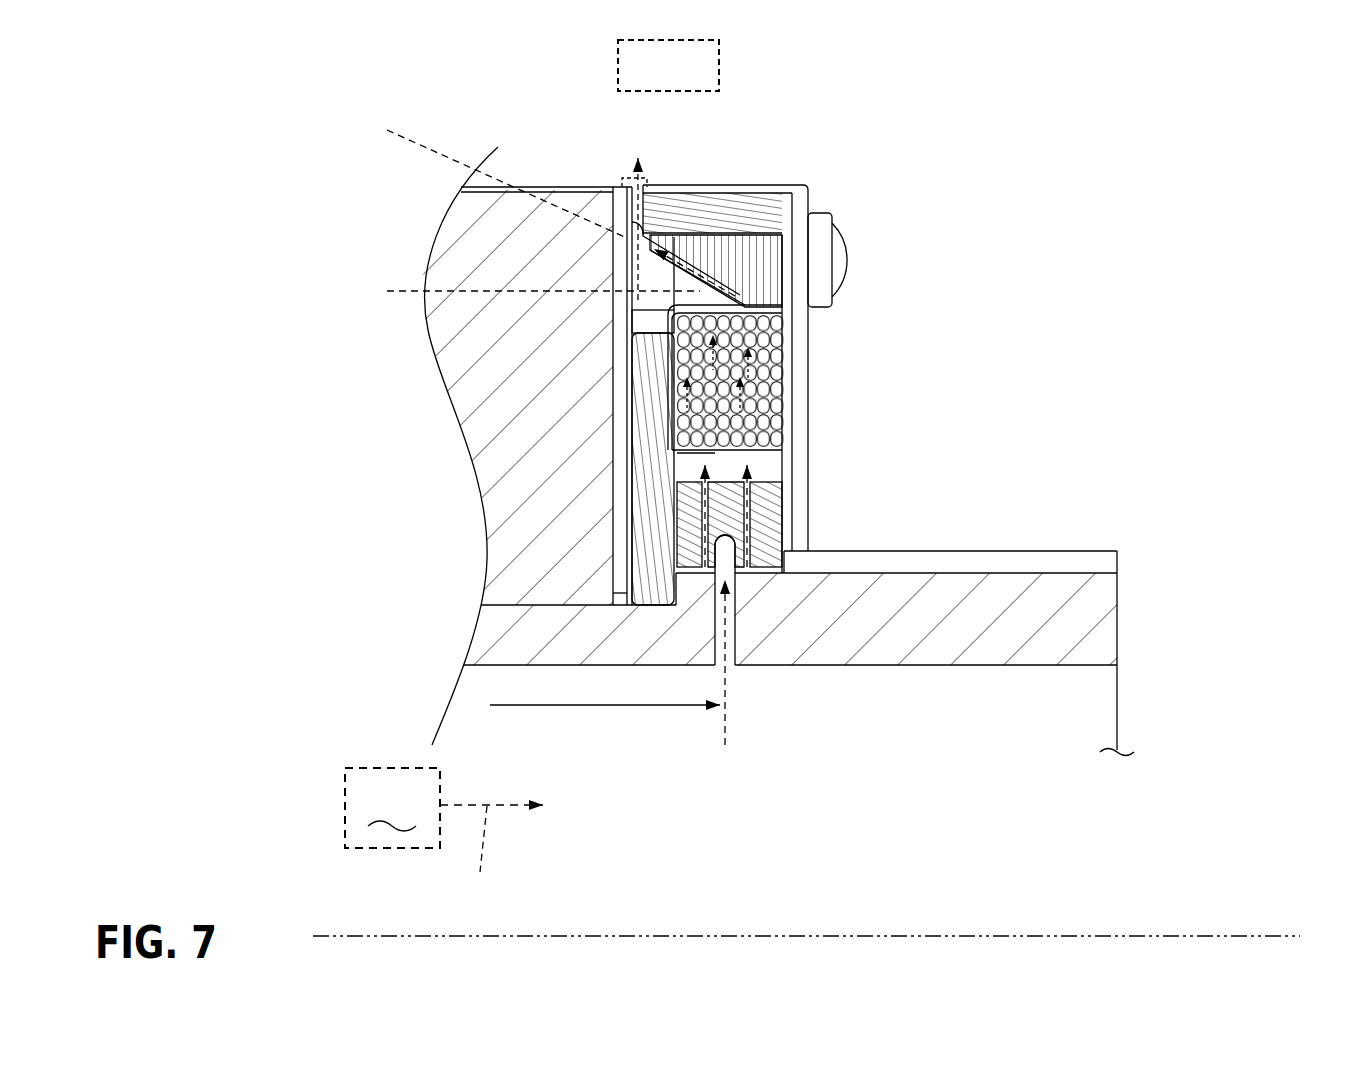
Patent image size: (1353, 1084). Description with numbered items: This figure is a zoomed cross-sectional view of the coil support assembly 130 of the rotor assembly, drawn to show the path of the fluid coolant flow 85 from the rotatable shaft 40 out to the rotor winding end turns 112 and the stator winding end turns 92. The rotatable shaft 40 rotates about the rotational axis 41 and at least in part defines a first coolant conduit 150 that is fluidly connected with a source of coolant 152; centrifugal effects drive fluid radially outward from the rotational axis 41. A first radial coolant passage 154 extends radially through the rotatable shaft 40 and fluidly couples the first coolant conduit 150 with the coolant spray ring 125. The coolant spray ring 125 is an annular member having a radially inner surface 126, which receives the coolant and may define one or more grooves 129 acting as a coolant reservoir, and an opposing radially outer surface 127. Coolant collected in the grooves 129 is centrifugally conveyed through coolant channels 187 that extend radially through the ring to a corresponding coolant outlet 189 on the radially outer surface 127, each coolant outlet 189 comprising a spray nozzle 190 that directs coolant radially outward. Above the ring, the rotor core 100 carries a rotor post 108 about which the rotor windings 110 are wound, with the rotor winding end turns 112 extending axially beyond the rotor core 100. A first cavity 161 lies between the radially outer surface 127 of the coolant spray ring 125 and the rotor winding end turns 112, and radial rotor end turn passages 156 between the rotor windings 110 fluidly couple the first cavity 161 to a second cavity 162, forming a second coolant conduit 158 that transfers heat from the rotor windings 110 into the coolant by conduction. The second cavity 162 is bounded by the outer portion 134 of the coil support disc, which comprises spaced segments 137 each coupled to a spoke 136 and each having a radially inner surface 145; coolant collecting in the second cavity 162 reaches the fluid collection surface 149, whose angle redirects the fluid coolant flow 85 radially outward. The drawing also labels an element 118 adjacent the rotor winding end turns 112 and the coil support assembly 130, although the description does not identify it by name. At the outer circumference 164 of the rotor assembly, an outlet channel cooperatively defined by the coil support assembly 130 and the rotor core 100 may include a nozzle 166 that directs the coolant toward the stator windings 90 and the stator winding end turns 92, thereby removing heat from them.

The rotatable shaft 40 is at (1117, 637).
The rotational axis 41 is at (762, 933).
The fluid coolant flow 85 is at (611, 186).
The stator windings 90 is at (668, 65).
The stator winding end turns 92 is at (668, 65).
The rotor core 100 is at (536, 182).
The rotor post 108 is at (565, 186).
The rotor windings 110 is at (790, 418).
The rotor winding end turns 112 is at (788, 443).
The hub 118 is at (836, 260).
The coolant spray ring 125 is at (782, 498).
The radially inner surface 126 is at (714, 577).
The radially outer surface 127 is at (789, 405).
The grooves 129 is at (733, 556).
The coil support assembly 130 is at (898, 443).
The outer portion 134 is at (786, 236).
The spoke 136 is at (676, 513).
The segments 137 is at (763, 222).
The radially inner surface 145 is at (690, 350).
The fluid collection surface 149 is at (746, 295).
The first coolant conduit 150 is at (506, 743).
The source of coolant 152 is at (444, 808).
The first radial coolant passage 154 is at (731, 617).
The radial rotor end turn passages 156 is at (778, 345).
The second coolant conduit 158 is at (748, 292).
The first cavity 161 is at (656, 436).
The second cavity 162 is at (668, 310).
The outer circumference 164 is at (688, 168).
The nozzle 166 is at (648, 178).
The coolant channels 187 is at (693, 512).
The coolant outlet 189 is at (693, 481).
The spray nozzle 190 is at (756, 473).